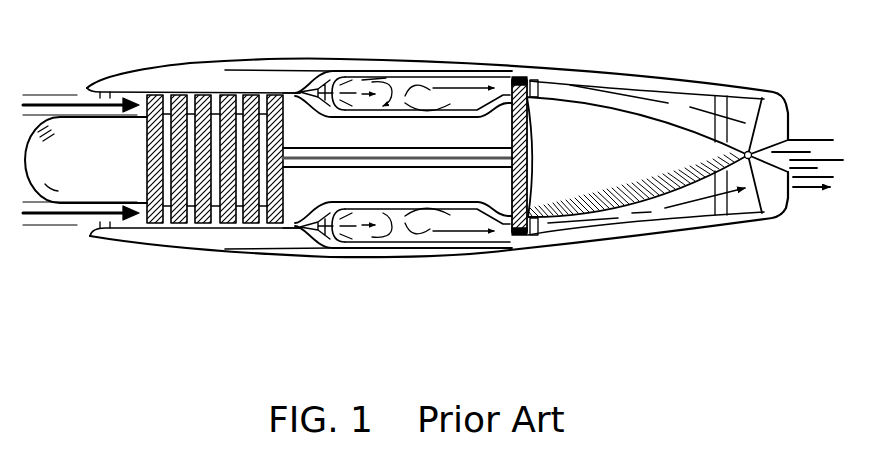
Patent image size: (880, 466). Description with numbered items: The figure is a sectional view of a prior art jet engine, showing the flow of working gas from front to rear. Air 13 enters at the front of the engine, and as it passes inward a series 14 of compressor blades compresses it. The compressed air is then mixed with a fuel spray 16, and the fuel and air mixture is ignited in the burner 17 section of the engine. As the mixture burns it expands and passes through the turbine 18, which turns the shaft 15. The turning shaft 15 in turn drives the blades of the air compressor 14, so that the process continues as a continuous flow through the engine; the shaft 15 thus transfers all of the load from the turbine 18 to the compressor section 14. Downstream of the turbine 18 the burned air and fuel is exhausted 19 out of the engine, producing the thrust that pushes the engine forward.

The air 13 is at (60, 220).
The series of blades 14 is at (285, 268).
The shaft 15 is at (313, 147).
The fuel spray 16 is at (338, 85).
The burner 17 is at (432, 230).
The turbine 18 is at (517, 105).
The exhaust 19 is at (812, 186).